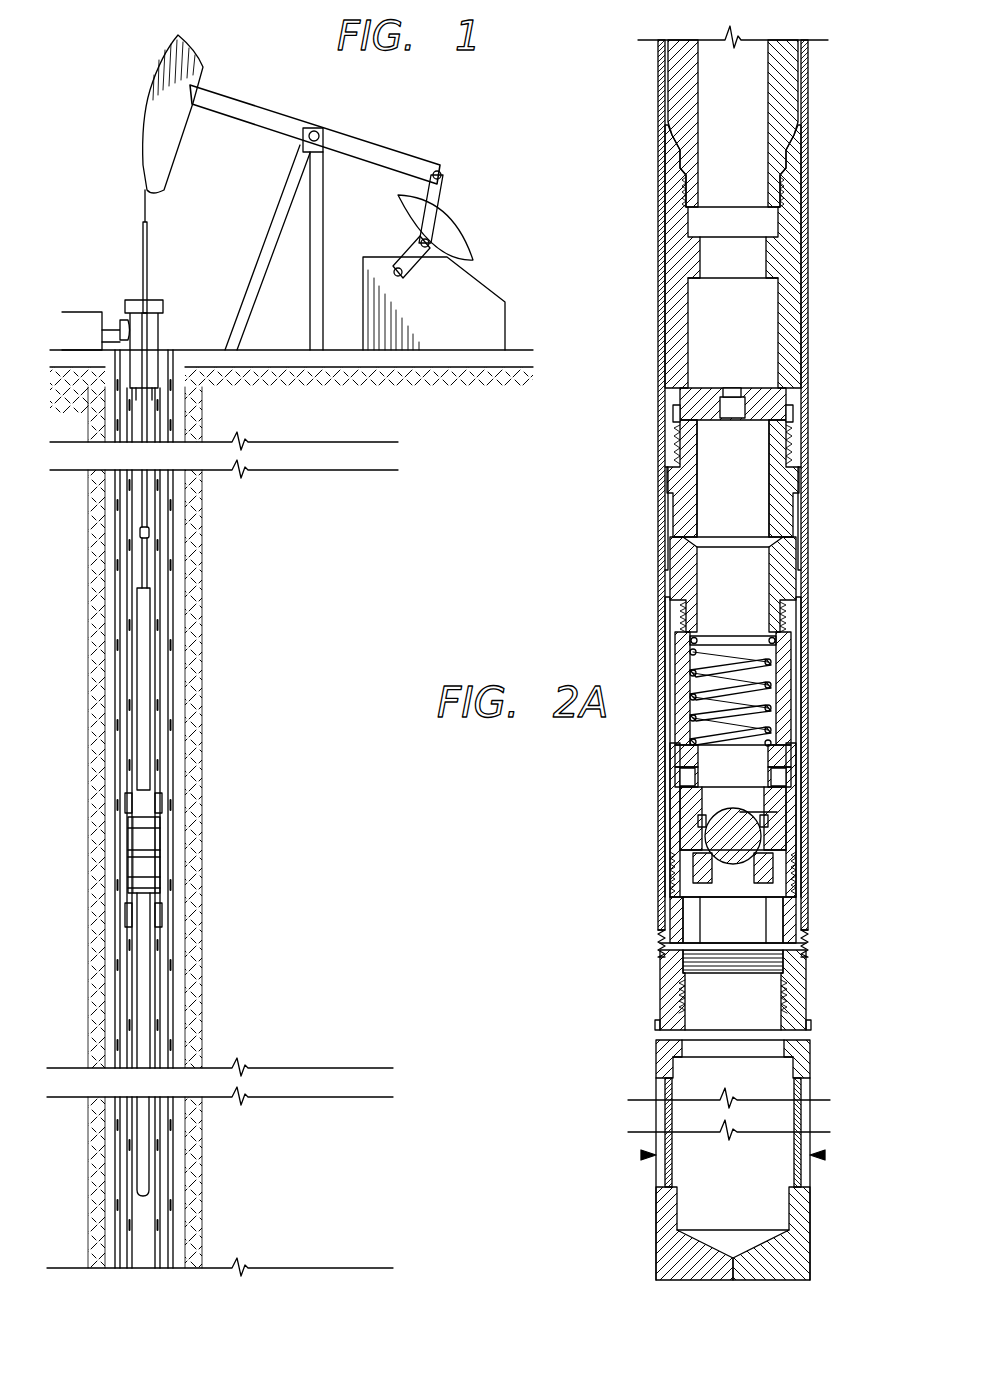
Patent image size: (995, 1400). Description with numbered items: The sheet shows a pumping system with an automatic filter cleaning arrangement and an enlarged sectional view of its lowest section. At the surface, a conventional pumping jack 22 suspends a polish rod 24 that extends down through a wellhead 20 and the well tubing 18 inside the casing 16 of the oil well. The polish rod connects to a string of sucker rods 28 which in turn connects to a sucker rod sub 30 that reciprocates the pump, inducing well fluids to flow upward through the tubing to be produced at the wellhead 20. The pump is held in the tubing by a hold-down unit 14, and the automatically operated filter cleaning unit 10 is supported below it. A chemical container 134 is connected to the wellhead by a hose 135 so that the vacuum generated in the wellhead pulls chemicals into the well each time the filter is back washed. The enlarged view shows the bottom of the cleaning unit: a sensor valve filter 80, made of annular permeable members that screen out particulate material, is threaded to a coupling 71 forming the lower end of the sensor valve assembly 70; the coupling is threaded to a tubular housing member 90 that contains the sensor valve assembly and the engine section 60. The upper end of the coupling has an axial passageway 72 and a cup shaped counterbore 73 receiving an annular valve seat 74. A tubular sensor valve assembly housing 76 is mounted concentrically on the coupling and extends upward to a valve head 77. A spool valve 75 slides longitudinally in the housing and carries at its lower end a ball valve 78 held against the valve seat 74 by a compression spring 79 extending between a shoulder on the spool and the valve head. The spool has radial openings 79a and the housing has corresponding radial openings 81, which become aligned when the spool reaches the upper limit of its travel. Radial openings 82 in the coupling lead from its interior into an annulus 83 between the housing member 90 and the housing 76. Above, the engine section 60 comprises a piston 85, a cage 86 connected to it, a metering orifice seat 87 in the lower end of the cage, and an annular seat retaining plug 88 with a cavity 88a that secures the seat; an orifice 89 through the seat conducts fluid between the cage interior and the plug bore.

In FIG. 1, the filter cleaning unit 10 is at (143, 1155).
In FIG. 1, the hold-down unit 14 is at (146, 863).
In FIG. 1, the casing 16 is at (173, 577).
In FIG. 1, the well tubing 18 is at (151, 557).
In FIG. 1, the wellhead 20 is at (160, 327).
In FIG. 1, the pumping jack 22 is at (372, 143).
In FIG. 1, the polish rod 24 is at (147, 247).
In FIG. 1, the string of sucker rods 28 is at (148, 507).
In FIG. 1, the sucker rod sub 30 is at (150, 530).
In FIG. 1, the chemical container 134 is at (72, 310).
In FIG. 1, the hose 135 is at (113, 322).
In FIG. 2A, the engine section 60 is at (812, 157).
In FIG. 2A, the sensor valve assembly 70 is at (804, 650).
In FIG. 2A, the coupling 71 is at (794, 1000).
In FIG. 2A, the axial passageway 72 is at (757, 893).
In FIG. 2A, the cup shaped counterbore 73 is at (708, 866).
In FIG. 2A, the annular valve seat 74 is at (771, 866).
In FIG. 2A, the spool valve 75 is at (774, 841).
In FIG. 2A, the sensor valve assembly housing 76 is at (789, 678).
In FIG. 2A, the valve head 77 is at (784, 558).
In FIG. 2A, the ball valve 78 is at (754, 813).
In FIG. 2A, the compression spring 79 is at (780, 706).
In FIG. 2A, the radial openings 79a is at (779, 778).
In FIG. 2A, the sensor valve filter 80 is at (806, 1087).
In FIG. 2A, the radial openings 81 is at (788, 754).
In FIG. 2A, the radial openings 82 is at (784, 908).
In FIG. 2A, the annulus 83 is at (804, 728).
In FIG. 2A, the piston 85 is at (793, 81).
In FIG. 2A, the cage 86 is at (771, 266).
In FIG. 2A, the metering orifice seat 87 is at (779, 397).
In FIG. 2A, the annular seat retaining plug 88 is at (781, 519).
In FIG. 2A, the cavity 88a is at (735, 462).
In FIG. 2A, the orifice 89 is at (735, 388).
In FIG. 2A, the tubular housing member 90 is at (806, 320).